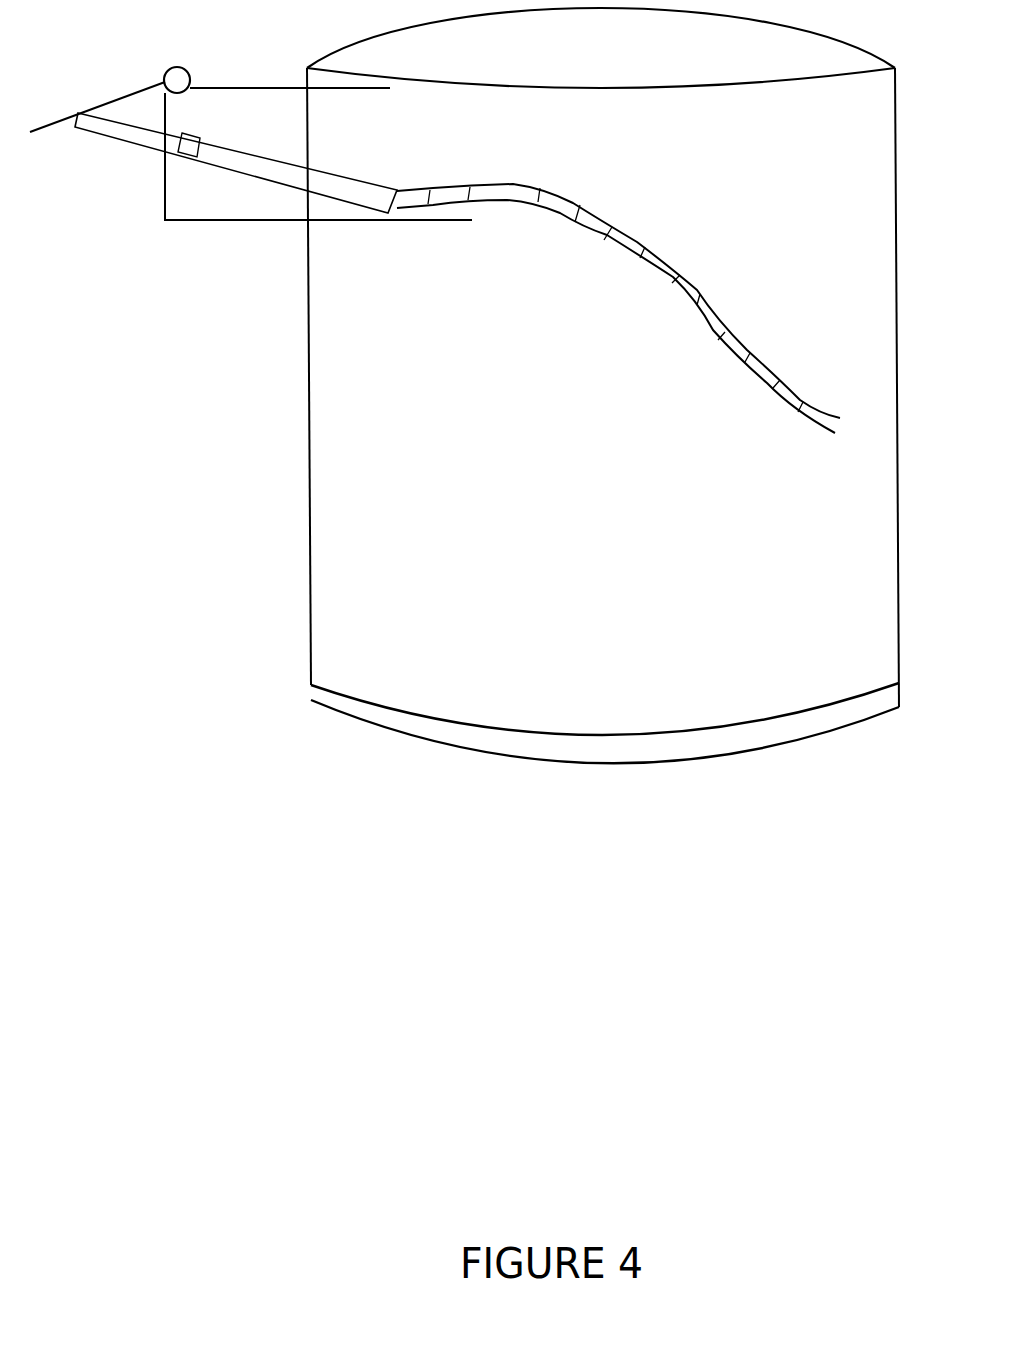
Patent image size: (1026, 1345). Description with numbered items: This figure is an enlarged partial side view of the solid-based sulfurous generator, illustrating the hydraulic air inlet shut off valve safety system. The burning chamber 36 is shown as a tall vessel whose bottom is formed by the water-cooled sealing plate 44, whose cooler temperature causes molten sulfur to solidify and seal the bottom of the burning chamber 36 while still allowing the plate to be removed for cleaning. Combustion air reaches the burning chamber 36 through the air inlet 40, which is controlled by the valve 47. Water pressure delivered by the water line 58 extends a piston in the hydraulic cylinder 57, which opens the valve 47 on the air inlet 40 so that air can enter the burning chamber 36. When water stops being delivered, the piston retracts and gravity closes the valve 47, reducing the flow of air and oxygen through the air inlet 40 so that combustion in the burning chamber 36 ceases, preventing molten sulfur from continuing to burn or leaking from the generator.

The burning chamber 36 is at (603, 357).
The water-cooled sealing plate 44 is at (605, 738).
The air inlet 40 is at (318, 154).
The valve 47 is at (110, 81).
The hydraulic cylinder 57 is at (236, 163).
The water line 58 is at (618, 308).